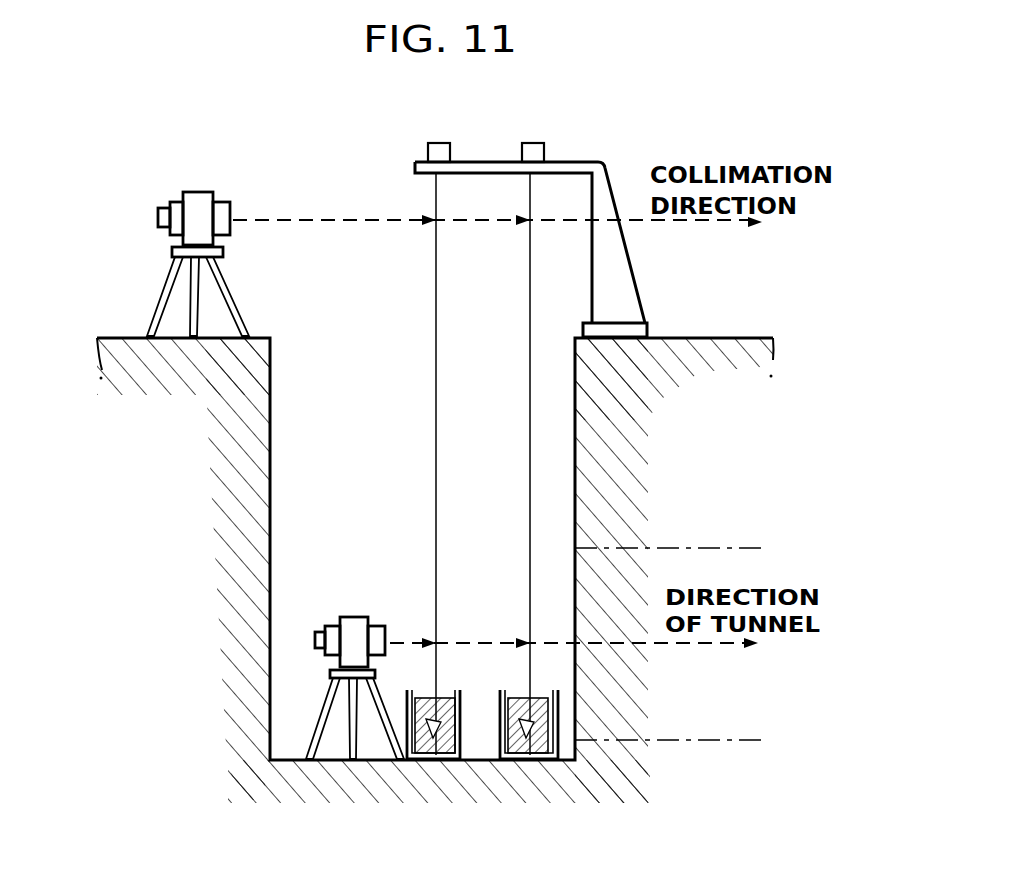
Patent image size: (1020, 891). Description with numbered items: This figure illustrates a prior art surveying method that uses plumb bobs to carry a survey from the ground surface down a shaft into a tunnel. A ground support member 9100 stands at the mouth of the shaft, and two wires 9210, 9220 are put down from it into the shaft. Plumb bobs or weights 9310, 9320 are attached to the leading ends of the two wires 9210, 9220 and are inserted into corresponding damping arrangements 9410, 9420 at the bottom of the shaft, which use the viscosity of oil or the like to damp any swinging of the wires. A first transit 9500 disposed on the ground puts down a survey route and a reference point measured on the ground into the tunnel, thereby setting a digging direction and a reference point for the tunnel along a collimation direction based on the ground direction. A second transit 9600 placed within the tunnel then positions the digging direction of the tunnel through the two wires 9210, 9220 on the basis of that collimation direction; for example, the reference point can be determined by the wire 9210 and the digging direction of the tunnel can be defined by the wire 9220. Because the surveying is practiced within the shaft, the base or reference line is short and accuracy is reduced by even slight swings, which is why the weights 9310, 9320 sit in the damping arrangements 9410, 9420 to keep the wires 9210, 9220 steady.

The ground support member 9100 is at (600, 170).
The wire 9210 is at (436, 253).
The wire 9220 is at (530, 417).
The plumb bob 9310 is at (437, 740).
The plumb bob 9320 is at (540, 750).
The damping arrangement 9410 is at (408, 760).
The damping arrangement 9420 is at (568, 762).
The first transit 9500 is at (197, 210).
The second transit 9600 is at (355, 632).